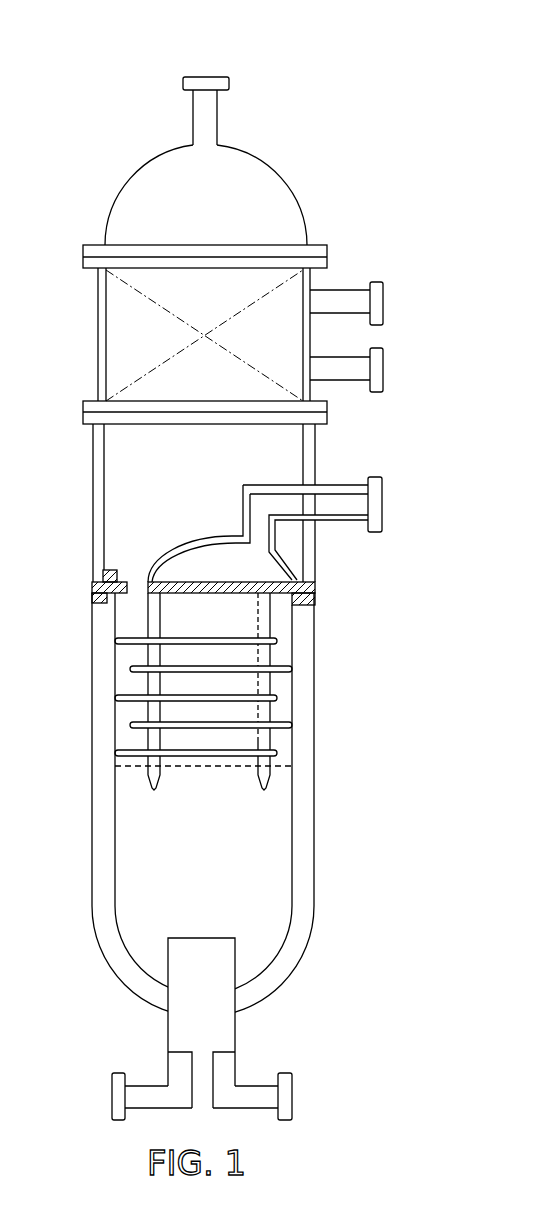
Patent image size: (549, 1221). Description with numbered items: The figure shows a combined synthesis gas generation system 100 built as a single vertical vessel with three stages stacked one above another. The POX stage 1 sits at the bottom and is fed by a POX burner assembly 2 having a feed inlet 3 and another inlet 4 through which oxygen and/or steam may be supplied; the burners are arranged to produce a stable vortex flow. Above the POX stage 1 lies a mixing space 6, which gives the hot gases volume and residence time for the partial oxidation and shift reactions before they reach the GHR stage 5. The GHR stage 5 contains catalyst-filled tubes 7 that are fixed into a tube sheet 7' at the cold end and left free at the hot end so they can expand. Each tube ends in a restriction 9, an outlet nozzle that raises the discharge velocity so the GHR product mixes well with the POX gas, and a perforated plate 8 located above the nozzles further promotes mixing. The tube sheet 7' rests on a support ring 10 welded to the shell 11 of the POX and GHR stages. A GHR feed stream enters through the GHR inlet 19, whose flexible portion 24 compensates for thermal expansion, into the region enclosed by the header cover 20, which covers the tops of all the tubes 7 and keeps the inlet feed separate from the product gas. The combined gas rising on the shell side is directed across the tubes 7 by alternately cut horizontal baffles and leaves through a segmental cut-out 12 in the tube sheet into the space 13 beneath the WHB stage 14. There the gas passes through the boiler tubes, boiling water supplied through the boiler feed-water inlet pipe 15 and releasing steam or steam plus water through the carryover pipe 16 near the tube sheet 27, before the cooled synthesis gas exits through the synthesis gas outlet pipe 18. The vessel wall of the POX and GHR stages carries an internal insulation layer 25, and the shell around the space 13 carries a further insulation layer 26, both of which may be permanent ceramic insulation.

The synthesis gas generation system 100 is at (131, 61).
The POX stage 1 is at (208, 900).
The POX burner assembly 2 is at (237, 1030).
The feed inlet 3 is at (292, 1097).
The other inlet 4 is at (112, 1098).
The GHR stage 5 is at (130, 683).
The mixing space 6 is at (212, 805).
The tubes 7 is at (209, 691).
The tube sheet 7' is at (204, 572).
The perforated plate 8 is at (223, 767).
The restriction 9 is at (152, 792).
The support ring 10 is at (92, 594).
The shell 11 is at (315, 692).
The segmental cut-out 12 is at (128, 581).
The space 13 is at (167, 475).
The WHB stage 14 is at (217, 307).
The boiler feed-water inlet pipe 15 is at (384, 368).
The outlet steam or steam plus water carryover pipe 16 is at (384, 301).
The synthesis gas outlet pipe 18 is at (205, 76).
The GHR inlet 19 is at (384, 498).
The header cover 20 is at (183, 562).
The flexible portion 24 is at (262, 494).
The insulation layer 25 is at (300, 935).
The insulation layer 26 is at (92, 507).
The tube sheet 27 is at (203, 426).